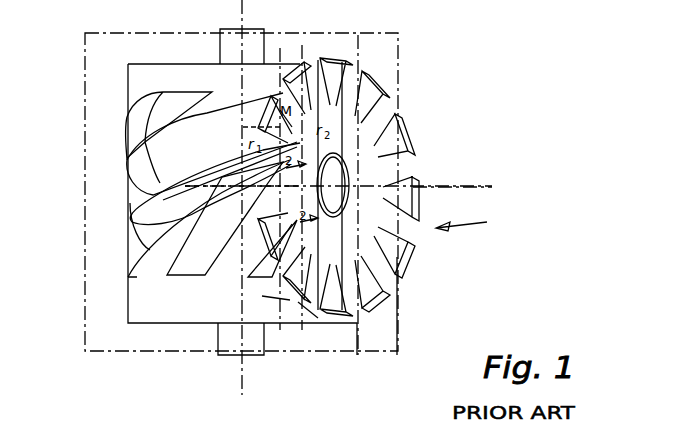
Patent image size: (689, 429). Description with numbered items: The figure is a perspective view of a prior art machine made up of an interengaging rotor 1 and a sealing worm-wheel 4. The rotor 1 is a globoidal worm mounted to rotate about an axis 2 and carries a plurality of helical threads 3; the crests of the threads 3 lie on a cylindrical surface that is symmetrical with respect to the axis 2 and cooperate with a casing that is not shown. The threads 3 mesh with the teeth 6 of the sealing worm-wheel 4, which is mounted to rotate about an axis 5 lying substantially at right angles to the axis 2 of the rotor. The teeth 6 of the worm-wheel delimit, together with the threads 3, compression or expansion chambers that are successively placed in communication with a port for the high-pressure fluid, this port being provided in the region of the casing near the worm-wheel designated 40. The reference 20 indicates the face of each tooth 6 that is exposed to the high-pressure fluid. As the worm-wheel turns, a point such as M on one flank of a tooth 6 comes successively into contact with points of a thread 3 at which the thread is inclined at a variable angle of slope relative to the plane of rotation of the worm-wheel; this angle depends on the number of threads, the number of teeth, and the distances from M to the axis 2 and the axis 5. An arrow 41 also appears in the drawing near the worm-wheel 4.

The rotor 1 is at (143, 207).
The axis 2 is at (245, 50).
The helical threads 3 is at (145, 231).
The sealing worm-wheel 4 is at (342, 130).
The axis 5 is at (447, 186).
The teeth 6 is at (388, 142).
The face of each tooth 20 is at (298, 302).
The region of the casing 40 is at (279, 300).
The rotation direction 41 is at (474, 217).